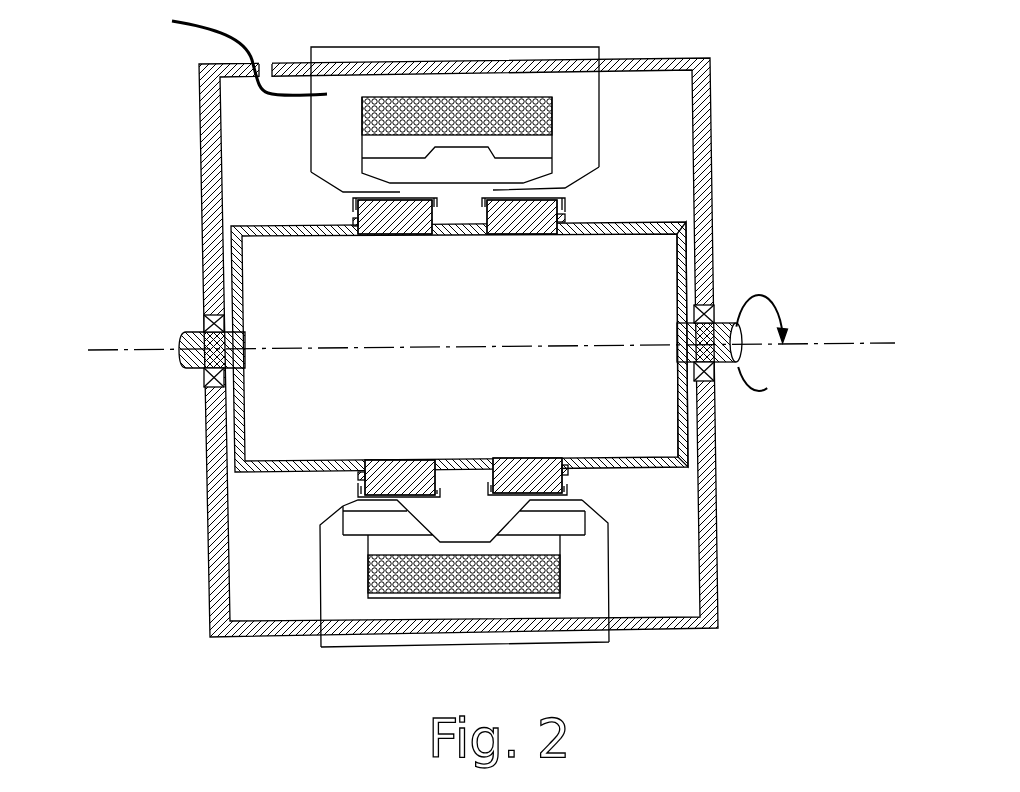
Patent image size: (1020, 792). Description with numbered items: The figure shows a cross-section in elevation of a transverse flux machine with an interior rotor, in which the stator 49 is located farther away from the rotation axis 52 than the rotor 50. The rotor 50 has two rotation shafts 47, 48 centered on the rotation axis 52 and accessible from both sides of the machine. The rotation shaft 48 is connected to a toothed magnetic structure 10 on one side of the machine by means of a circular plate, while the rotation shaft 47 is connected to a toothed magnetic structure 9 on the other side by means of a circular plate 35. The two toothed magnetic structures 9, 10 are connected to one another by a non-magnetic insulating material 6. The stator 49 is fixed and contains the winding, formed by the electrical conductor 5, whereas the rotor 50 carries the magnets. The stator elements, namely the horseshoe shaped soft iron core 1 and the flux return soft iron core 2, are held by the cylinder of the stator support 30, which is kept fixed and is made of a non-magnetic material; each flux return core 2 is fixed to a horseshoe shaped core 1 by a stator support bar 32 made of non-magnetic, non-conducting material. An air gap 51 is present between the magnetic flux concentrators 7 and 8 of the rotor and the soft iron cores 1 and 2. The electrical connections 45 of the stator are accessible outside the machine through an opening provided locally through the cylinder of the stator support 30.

The horseshoe shaped soft iron core 1 is at (580, 97).
The flux return soft iron core 2 is at (480, 236).
The electrical conductor 5 is at (553, 125).
The non-magnetic insulating material 6 is at (465, 190).
The magnetic flux concentrator 7 is at (565, 202).
The magnetic flux concentrator 8 is at (353, 200).
The toothed magnetic structure 9 is at (520, 223).
The toothed magnetic structure 10 is at (389, 232).
The stator support cylinder 30 is at (207, 425).
The stator support bar 32 is at (383, 168).
The circular plate 35 is at (672, 237).
The electrical connections 45 is at (247, 40).
The rotation shaft 47 is at (718, 322).
The rotation shaft 48 is at (190, 333).
The stator 49 is at (714, 538).
The rotor 50 is at (640, 432).
The air gap 51 is at (360, 495).
The rotation axis 52 is at (840, 345).